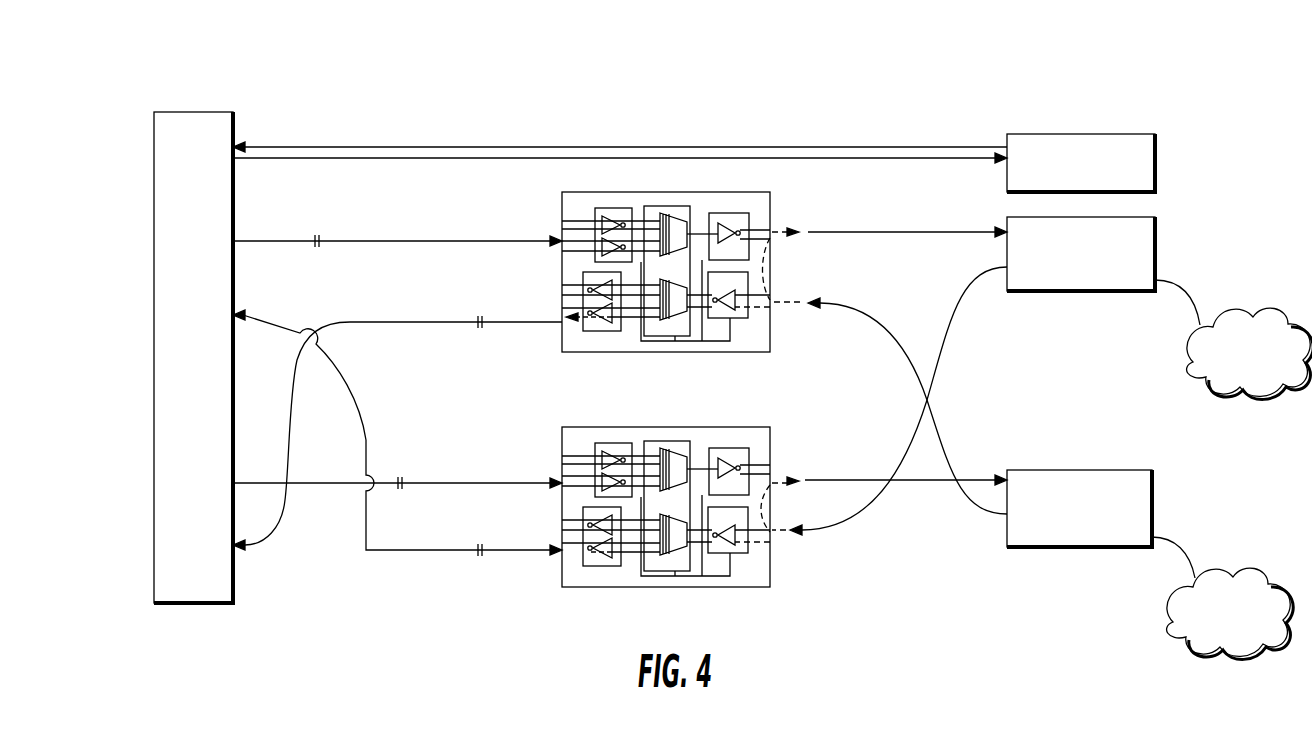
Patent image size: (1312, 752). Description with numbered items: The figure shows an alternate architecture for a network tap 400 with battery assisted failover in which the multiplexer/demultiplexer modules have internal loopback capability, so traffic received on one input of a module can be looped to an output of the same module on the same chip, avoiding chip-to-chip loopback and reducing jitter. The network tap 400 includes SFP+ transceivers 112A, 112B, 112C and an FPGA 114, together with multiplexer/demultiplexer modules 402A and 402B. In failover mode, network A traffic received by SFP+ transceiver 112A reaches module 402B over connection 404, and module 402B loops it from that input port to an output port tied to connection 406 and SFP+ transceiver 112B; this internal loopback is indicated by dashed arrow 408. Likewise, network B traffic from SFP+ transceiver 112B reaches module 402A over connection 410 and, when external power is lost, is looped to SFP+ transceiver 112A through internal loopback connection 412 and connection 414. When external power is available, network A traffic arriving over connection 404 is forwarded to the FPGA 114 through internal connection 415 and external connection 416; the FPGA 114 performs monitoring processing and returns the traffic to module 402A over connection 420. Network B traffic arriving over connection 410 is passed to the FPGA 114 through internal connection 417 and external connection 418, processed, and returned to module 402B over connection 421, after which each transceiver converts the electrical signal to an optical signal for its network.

The network tap 400 is at (471, 55).
The FPGA 114 is at (204, 119).
The SFP+ transceiver 112A is at (1152, 491).
The SFP+ transceiver 112B is at (1155, 250).
The SFP+ transceiver 112C is at (1157, 161).
The multiplexer/demultiplexer module 402A is at (666, 507).
The multiplexer/demultiplexer module 402B is at (659, 279).
The connection 404 is at (870, 322).
The connection 406 is at (871, 232).
The dashed arrow 408 is at (770, 268).
The connection 410 is at (957, 325).
The internal loopback connection 412 is at (762, 518).
The connection 414 is at (808, 480).
The internal connection 415 is at (584, 337).
The external connection 416 is at (400, 323).
The internal connection 417 is at (703, 577).
The external connection 418 is at (393, 550).
The connection 420 is at (420, 483).
The connection 421 is at (410, 241).